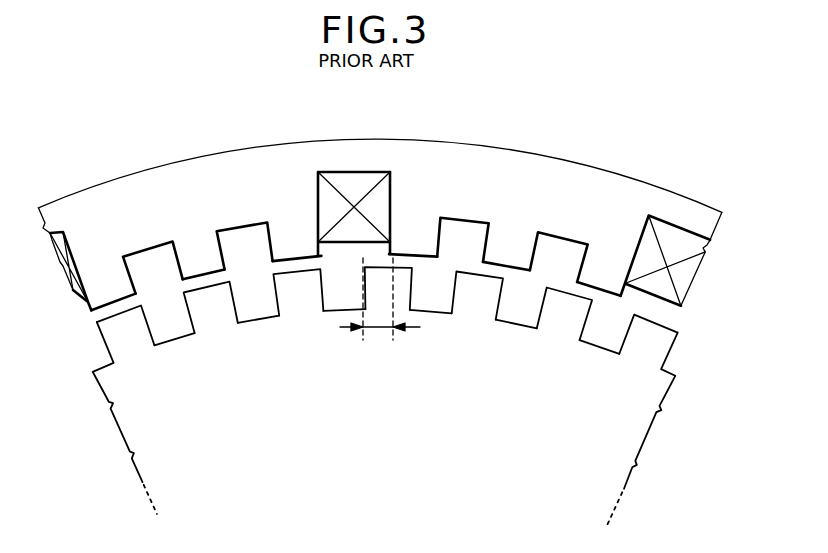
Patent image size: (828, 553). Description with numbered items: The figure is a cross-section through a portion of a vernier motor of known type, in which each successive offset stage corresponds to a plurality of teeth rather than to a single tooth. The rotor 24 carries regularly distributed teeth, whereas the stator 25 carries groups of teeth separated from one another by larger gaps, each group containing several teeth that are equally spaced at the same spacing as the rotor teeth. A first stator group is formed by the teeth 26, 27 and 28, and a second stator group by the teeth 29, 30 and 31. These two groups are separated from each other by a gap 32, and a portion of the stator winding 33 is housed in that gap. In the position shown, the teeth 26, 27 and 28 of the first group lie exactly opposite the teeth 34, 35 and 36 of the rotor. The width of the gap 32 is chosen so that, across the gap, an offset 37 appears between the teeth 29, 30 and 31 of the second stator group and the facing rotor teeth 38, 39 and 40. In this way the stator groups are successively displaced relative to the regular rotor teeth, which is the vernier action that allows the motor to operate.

The rotor 24 is at (597, 442).
The stator 25 is at (567, 193).
The stator tooth 26 is at (107, 278).
The stator tooth 27 is at (198, 250).
The stator tooth 28 is at (293, 237).
The stator tooth 29 is at (415, 235).
The stator tooth 30 is at (508, 245).
The stator tooth 31 is at (605, 263).
The gap 32 is at (357, 170).
The stator winding 33 is at (378, 203).
The rotor tooth 34 is at (120, 332).
The rotor tooth 35 is at (207, 303).
The rotor tooth 36 is at (295, 290).
The offset 37 is at (380, 328).
The rotor tooth 38 is at (400, 285).
The rotor tooth 39 is at (477, 292).
The rotor tooth 40 is at (562, 307).